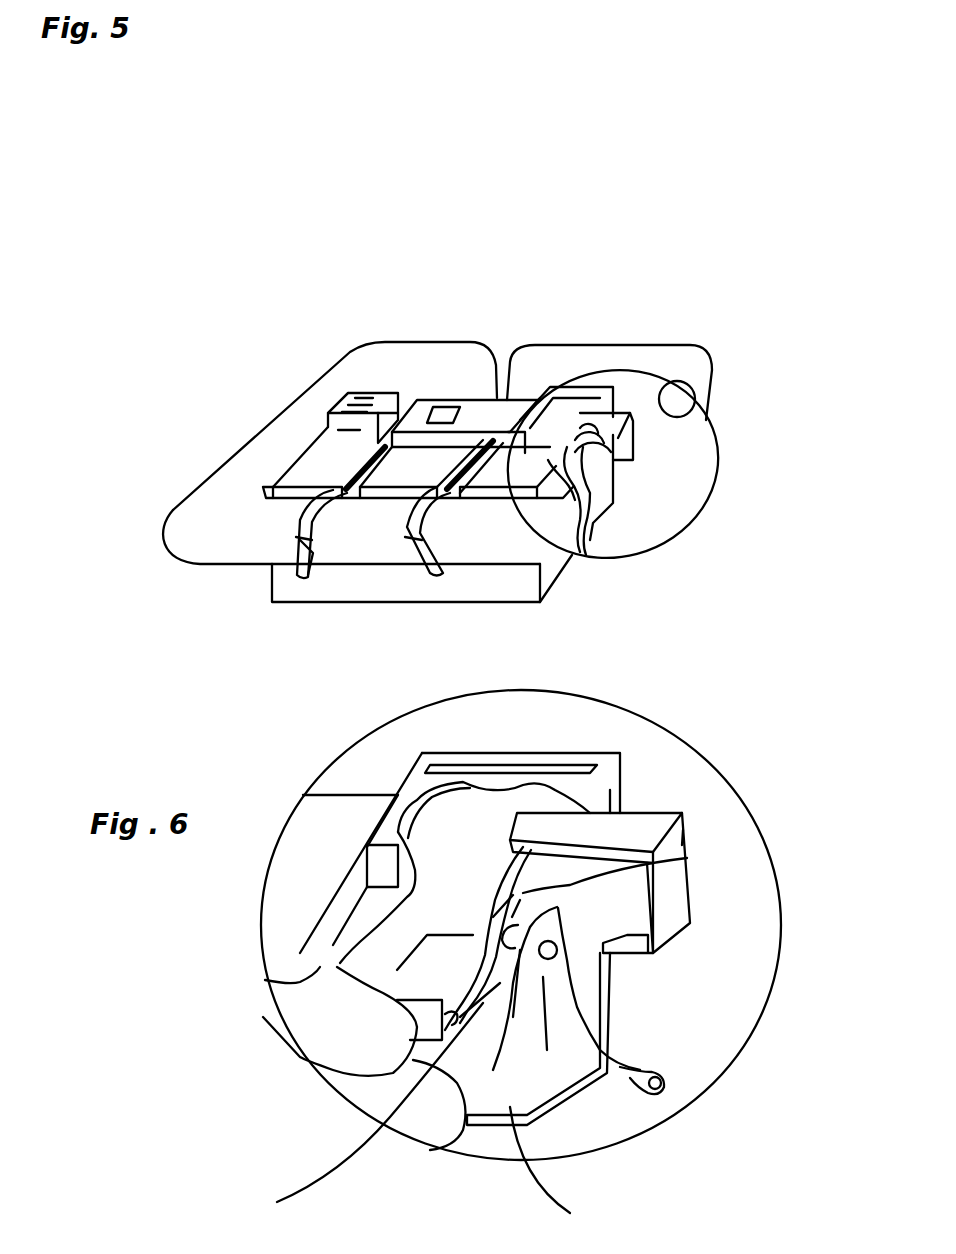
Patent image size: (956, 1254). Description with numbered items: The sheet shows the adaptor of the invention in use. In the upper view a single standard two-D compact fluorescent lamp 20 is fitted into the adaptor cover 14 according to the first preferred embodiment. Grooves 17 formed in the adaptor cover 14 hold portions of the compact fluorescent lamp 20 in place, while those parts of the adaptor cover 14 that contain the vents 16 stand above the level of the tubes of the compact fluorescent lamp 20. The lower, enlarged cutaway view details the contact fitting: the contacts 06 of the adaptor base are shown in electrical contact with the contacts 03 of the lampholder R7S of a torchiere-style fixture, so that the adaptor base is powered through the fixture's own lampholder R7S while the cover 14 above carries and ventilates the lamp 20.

In FIG. 5, the adaptor cover 14 is at (318, 467).
In FIG. 5, the vents 16 is at (360, 392).
In FIG. 5, the grooves 17 is at (320, 535).
In FIG. 5, the compact fluorescent lamp 20 is at (297, 400).
In FIG. 5, the contacts 06 is at (640, 402).
In FIG. 6, the contacts 06 is at (687, 858).
In FIG. 5, the contacts 03 is at (597, 495).
In FIG. 6, the contacts 03 is at (570, 1057).
In FIG. 6, the lampholder R7S is at (683, 830).